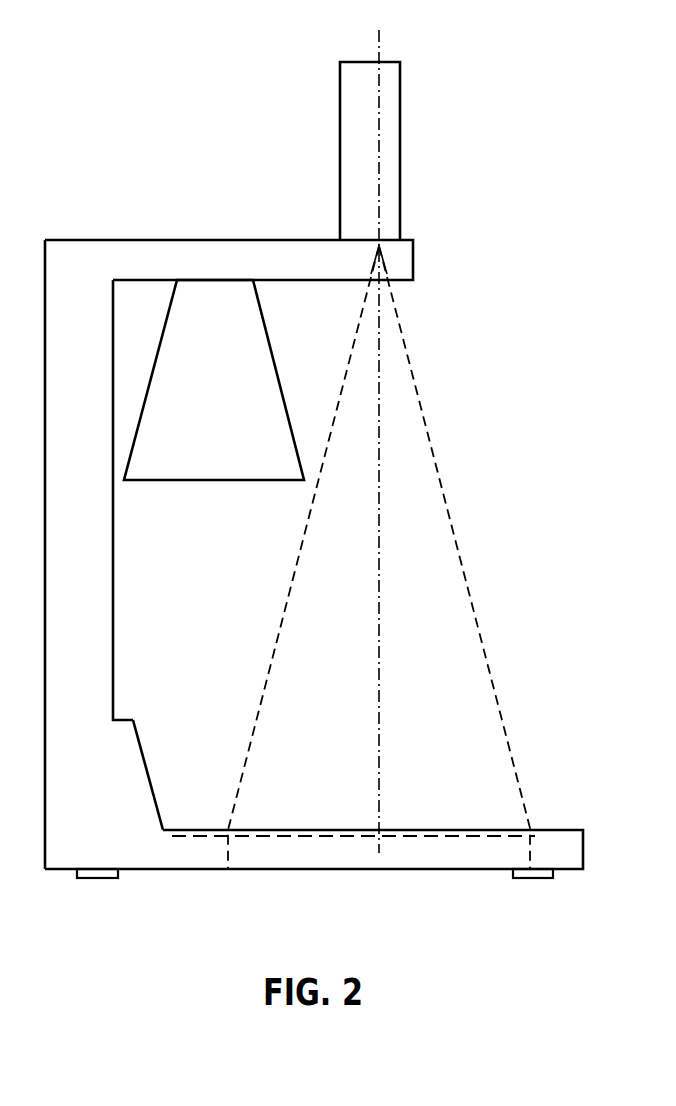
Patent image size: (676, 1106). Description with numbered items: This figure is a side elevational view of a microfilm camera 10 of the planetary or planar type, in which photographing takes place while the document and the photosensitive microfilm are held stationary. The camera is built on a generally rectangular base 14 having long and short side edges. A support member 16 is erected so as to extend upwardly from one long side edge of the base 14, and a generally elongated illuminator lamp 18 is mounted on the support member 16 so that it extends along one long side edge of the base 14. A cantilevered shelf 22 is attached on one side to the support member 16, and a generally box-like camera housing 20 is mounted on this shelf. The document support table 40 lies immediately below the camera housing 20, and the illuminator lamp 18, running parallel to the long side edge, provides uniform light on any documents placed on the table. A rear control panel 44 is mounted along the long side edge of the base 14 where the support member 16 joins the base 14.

The microfilm camera 10 is at (230, 224).
The base 14 is at (336, 851).
The support member 16 is at (100, 706).
The illuminator lamp 18 is at (238, 412).
The camera housing 20 is at (392, 127).
The cantilevered shelf 22 is at (98, 283).
The document support table 40 is at (253, 829).
The rear control panel 44 is at (153, 714).